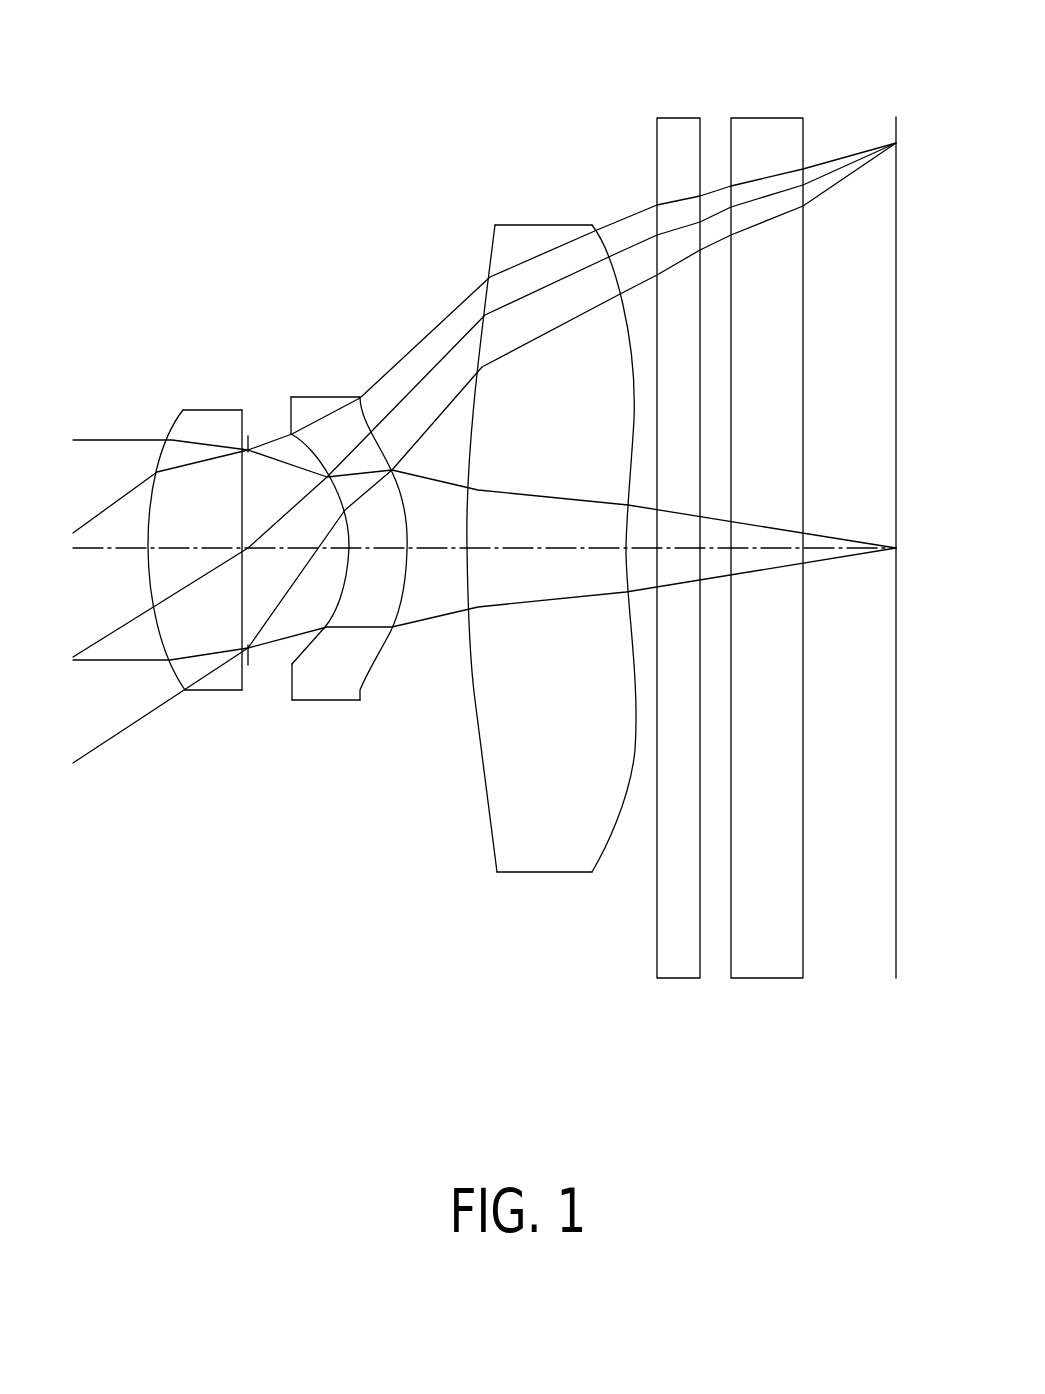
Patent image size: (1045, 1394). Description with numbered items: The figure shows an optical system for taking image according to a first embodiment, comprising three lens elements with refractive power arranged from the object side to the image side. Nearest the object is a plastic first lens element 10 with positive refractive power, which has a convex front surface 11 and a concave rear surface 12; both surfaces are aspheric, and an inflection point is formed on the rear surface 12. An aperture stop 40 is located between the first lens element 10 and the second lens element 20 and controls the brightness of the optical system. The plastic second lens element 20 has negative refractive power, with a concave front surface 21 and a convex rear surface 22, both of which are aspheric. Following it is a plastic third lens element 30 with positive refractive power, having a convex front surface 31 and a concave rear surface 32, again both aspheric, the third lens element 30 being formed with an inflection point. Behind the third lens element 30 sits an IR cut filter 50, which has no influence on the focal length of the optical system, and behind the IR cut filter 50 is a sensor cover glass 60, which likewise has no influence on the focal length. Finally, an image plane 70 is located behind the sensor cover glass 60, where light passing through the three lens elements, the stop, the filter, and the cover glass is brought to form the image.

The first lens element 10 is at (178, 574).
The front surface of the first lens element 11 is at (163, 666).
The rear surface of the first lens element 12 is at (238, 690).
The second lens element 20 is at (342, 527).
The front surface of the second lens element 21 is at (301, 672).
The rear surface of the second lens element 22 is at (380, 665).
The third lens element 30 is at (543, 534).
The front surface of the third lens element 31 is at (470, 680).
The rear surface of the third lens element 32 is at (636, 777).
The aperture stop 40 is at (235, 410).
The IR cut filter 50 is at (679, 155).
The sensor cover glass 60 is at (775, 145).
The image plane 70 is at (890, 115).